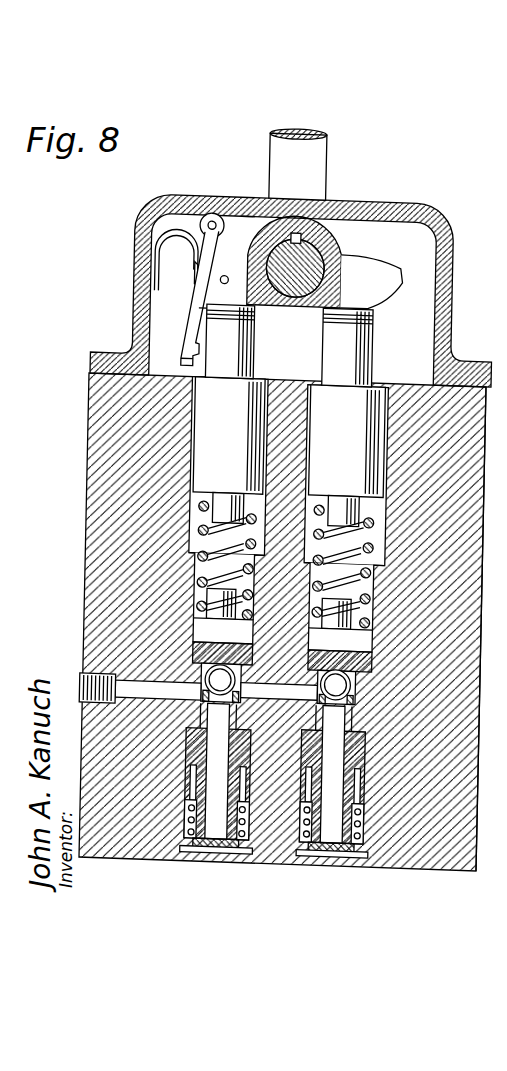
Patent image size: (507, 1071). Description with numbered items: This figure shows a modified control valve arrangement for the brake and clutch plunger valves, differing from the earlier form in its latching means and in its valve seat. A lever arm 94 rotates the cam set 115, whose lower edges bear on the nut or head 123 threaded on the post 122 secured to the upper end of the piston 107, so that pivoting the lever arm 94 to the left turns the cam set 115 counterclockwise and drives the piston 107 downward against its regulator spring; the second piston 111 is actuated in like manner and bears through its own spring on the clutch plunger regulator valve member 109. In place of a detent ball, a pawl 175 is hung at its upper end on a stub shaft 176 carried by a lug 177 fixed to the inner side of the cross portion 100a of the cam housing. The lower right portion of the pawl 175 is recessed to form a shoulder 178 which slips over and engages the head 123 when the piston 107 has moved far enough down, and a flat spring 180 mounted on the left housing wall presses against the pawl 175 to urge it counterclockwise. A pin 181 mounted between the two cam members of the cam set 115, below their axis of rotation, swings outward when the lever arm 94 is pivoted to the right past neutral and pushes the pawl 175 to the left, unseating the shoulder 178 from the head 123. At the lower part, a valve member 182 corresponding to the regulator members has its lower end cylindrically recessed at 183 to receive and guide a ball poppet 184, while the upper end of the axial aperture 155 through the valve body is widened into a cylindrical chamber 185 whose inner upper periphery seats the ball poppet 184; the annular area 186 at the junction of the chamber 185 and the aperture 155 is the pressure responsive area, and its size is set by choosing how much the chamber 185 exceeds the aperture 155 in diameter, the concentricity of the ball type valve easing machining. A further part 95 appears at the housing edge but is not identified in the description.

The lever arm 94 is at (291, 150).
The pump housing 95 is at (491, 608).
The cross portion 100a is at (157, 210).
The piston 107 is at (230, 441).
The clutch plunger regulator valve member 109 is at (345, 644).
The second piston 111 is at (345, 442).
The cam set 115 is at (378, 270).
The post 122 is at (253, 347).
The nut 123 is at (255, 316).
The axial aperture 155 is at (194, 752).
The pawl 175 is at (196, 312).
The stub shaft 176 is at (206, 220).
The lug 177 is at (241, 214).
The shoulder 178 is at (180, 346).
The flat spring 180 is at (160, 240).
The pin 181 is at (221, 275).
The valve member 182 is at (200, 632).
The cylindrical recess 183 is at (205, 654).
The ball poppet 184 is at (215, 673).
The cylindrical chamber 185 is at (207, 696).
The annular area 186 is at (248, 691).